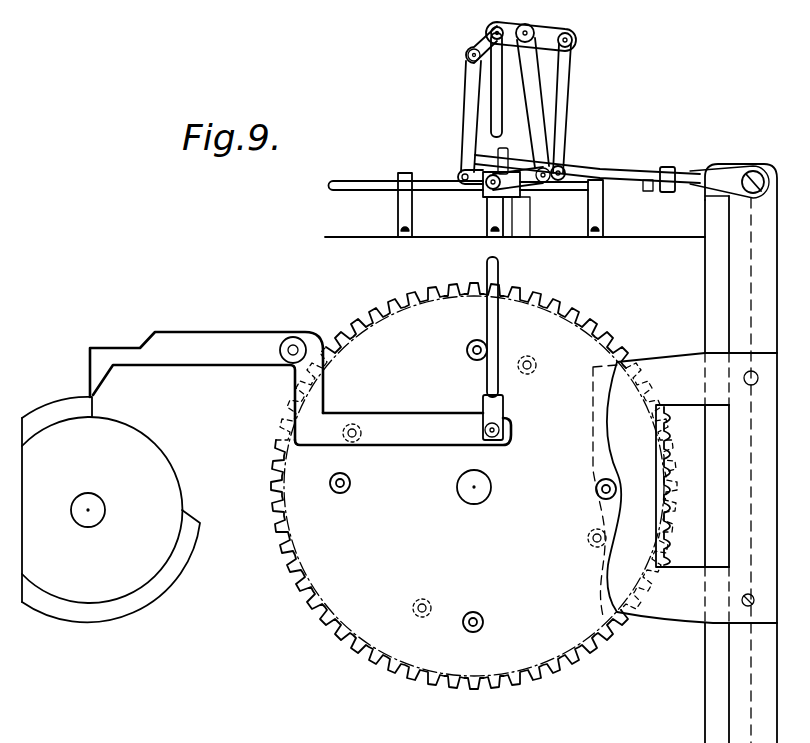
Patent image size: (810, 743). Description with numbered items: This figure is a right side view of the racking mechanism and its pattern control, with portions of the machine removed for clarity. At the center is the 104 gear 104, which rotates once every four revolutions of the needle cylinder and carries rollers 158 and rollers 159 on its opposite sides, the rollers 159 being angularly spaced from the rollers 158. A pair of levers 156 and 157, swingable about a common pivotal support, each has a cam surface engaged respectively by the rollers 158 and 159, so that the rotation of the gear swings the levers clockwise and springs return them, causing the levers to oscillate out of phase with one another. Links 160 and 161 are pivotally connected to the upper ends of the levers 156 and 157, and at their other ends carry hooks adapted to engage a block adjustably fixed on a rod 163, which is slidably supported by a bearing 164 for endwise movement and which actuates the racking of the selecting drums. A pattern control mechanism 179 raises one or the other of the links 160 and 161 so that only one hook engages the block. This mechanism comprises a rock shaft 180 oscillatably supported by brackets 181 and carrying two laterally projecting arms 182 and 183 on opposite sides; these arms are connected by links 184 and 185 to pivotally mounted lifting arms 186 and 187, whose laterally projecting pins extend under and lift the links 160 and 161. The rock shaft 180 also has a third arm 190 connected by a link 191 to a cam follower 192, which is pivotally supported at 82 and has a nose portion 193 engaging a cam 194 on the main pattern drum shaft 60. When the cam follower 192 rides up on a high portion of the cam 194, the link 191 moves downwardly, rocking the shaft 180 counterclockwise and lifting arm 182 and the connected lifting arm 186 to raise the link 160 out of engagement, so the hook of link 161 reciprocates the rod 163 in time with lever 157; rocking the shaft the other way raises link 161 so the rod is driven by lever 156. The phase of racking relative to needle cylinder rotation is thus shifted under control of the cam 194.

The main pattern drum shaft 60 is at (105, 508).
The pivotal support of cam follower 82 is at (296, 343).
The "104" gear 104 is at (306, 556).
The lever 156 is at (680, 612).
The lever 157 is at (705, 272).
The rollers 158 is at (467, 351).
The rollers 159 is at (532, 378).
The link 160 is at (637, 166).
The link 161 is at (606, 186).
The rod 163 is at (351, 181).
The bearing 164 is at (397, 201).
The pattern control mechanism 179 is at (526, 21).
The rock shaft 180 is at (536, 28).
The brackets 181 is at (545, 108).
The arm 182 is at (574, 35).
The arm 183 is at (477, 50).
The link 184 is at (565, 72).
The link 185 is at (466, 78).
The lifting arm 186 is at (566, 199).
The lifting arm 187 is at (463, 175).
The third arm 190 is at (497, 26).
The link 191 is at (494, 323).
The cam follower 192 is at (421, 413).
The nose portion 193 is at (108, 376).
The cam 194 is at (50, 402).